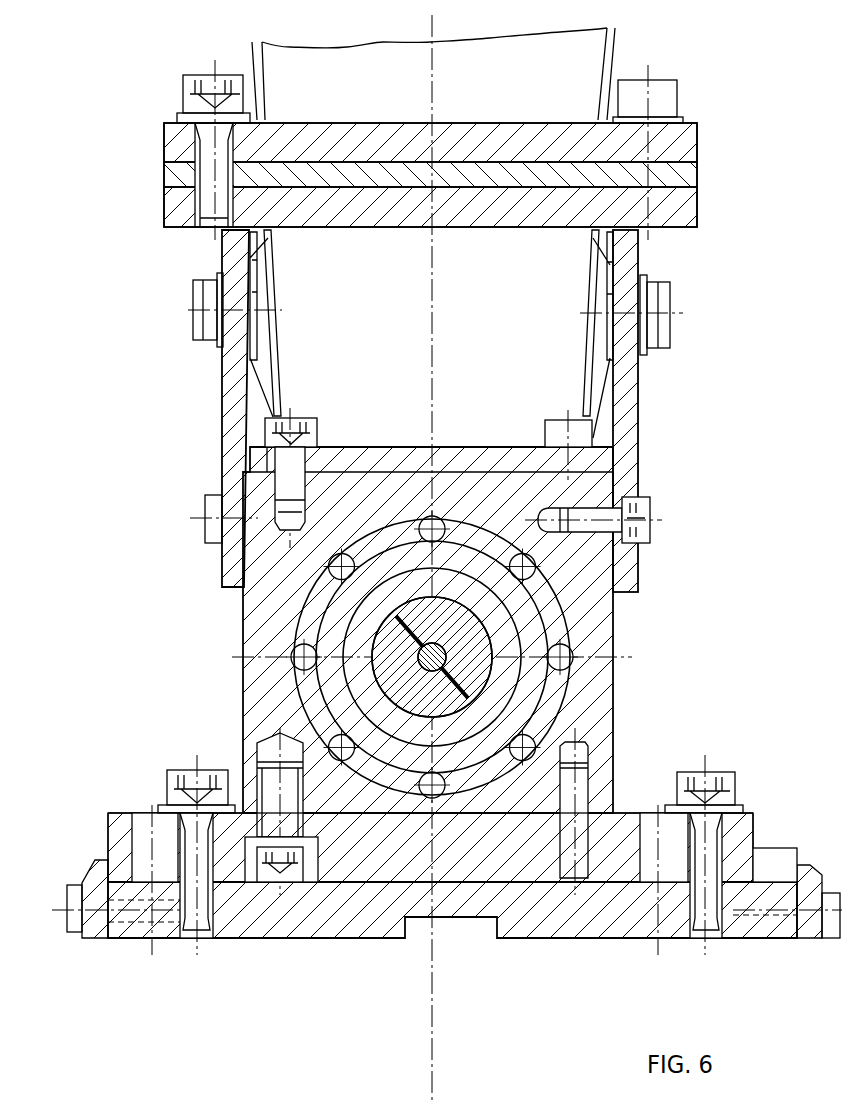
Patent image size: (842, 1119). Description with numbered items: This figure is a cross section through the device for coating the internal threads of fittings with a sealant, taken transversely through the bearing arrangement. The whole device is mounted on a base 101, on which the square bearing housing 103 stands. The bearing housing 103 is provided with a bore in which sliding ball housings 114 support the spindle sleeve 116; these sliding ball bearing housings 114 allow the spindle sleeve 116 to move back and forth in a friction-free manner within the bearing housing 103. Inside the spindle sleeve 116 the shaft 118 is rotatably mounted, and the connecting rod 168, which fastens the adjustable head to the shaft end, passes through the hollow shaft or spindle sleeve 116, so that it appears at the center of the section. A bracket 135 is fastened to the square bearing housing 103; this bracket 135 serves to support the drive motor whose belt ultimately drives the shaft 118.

The base 101 is at (327, 922).
The bearing housing 103 is at (588, 590).
The sliding ball housings 114 is at (567, 657).
The spindle sleeve 116 is at (330, 626).
The shaft 118 is at (385, 675).
The bracket 135 is at (630, 437).
The connecting rod 168 is at (447, 668).